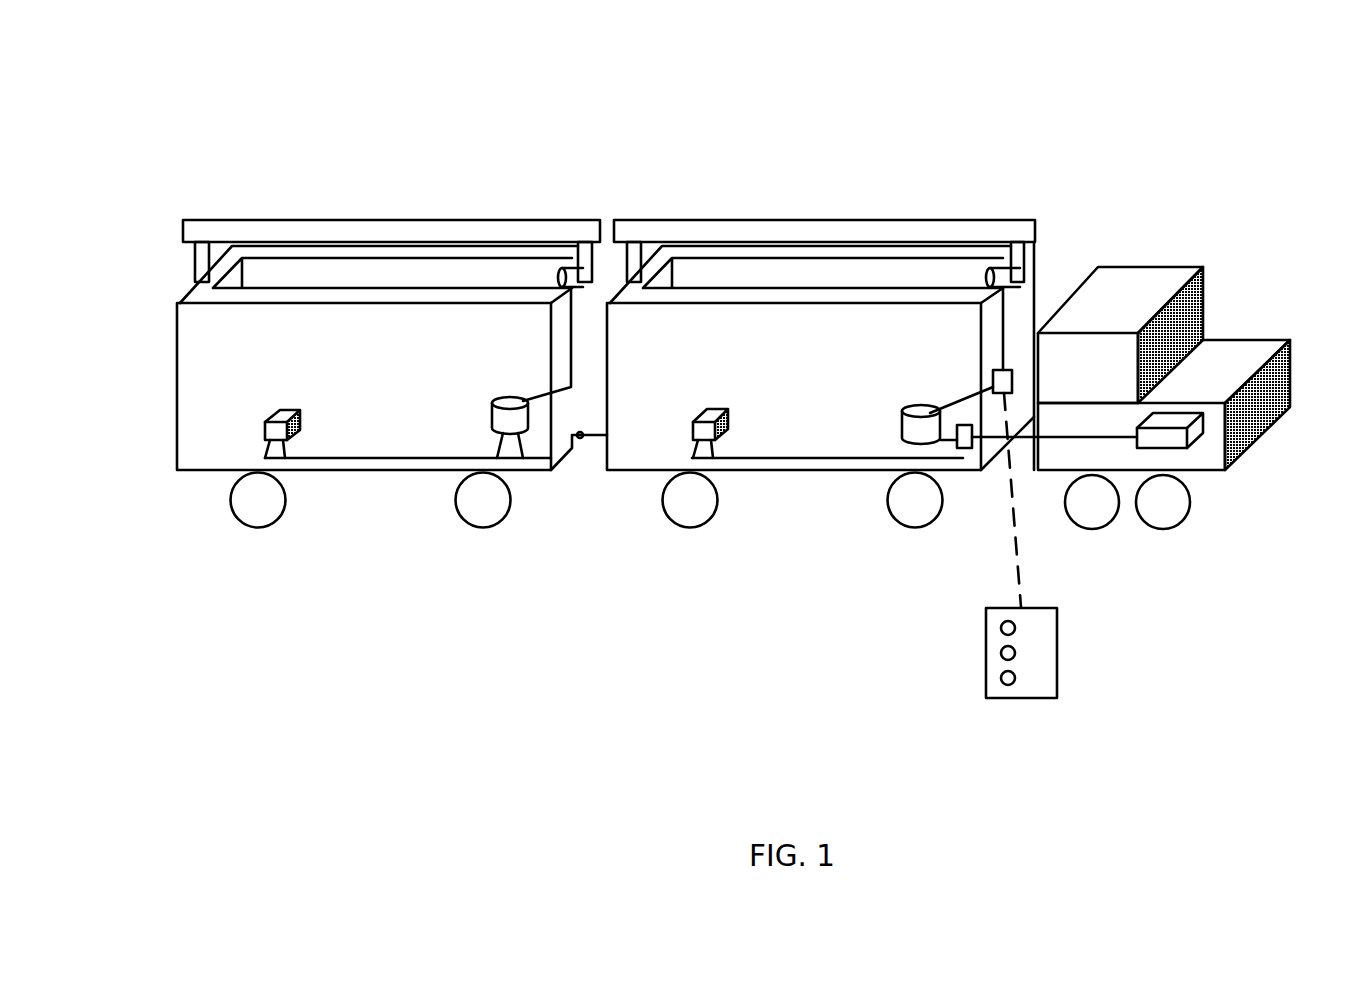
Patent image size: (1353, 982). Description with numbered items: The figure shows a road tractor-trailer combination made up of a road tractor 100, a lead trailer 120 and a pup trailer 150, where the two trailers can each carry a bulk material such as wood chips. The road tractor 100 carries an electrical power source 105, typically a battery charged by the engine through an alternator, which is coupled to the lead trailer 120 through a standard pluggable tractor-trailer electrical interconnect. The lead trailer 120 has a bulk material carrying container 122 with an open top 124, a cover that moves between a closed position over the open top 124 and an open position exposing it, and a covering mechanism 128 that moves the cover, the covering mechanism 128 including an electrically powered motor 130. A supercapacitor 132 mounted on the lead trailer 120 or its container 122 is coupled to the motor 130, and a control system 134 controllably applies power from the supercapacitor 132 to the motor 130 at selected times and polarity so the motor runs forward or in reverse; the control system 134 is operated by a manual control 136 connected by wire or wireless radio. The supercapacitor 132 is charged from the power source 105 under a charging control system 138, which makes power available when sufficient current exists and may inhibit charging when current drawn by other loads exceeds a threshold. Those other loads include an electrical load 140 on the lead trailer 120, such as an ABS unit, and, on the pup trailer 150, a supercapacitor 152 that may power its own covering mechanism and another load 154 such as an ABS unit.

The road tractor 100 is at (1196, 247).
The electrical power source 105 is at (1177, 435).
The lead trailer 120 is at (913, 159).
The bulk material carrying container 122 is at (728, 373).
The open top 124 is at (810, 267).
The covering mechanism 128 is at (1028, 240).
The electrically powered motor 130 is at (983, 285).
The supercapacitor 132 is at (903, 420).
The control system 134 is at (993, 375).
The manual control 136 is at (985, 642).
The charging control system 138 is at (965, 448).
The electrical load 140 is at (717, 430).
The pup trailer 150 is at (421, 154).
The supercapacitor 152 is at (515, 438).
The load 154 is at (293, 430).